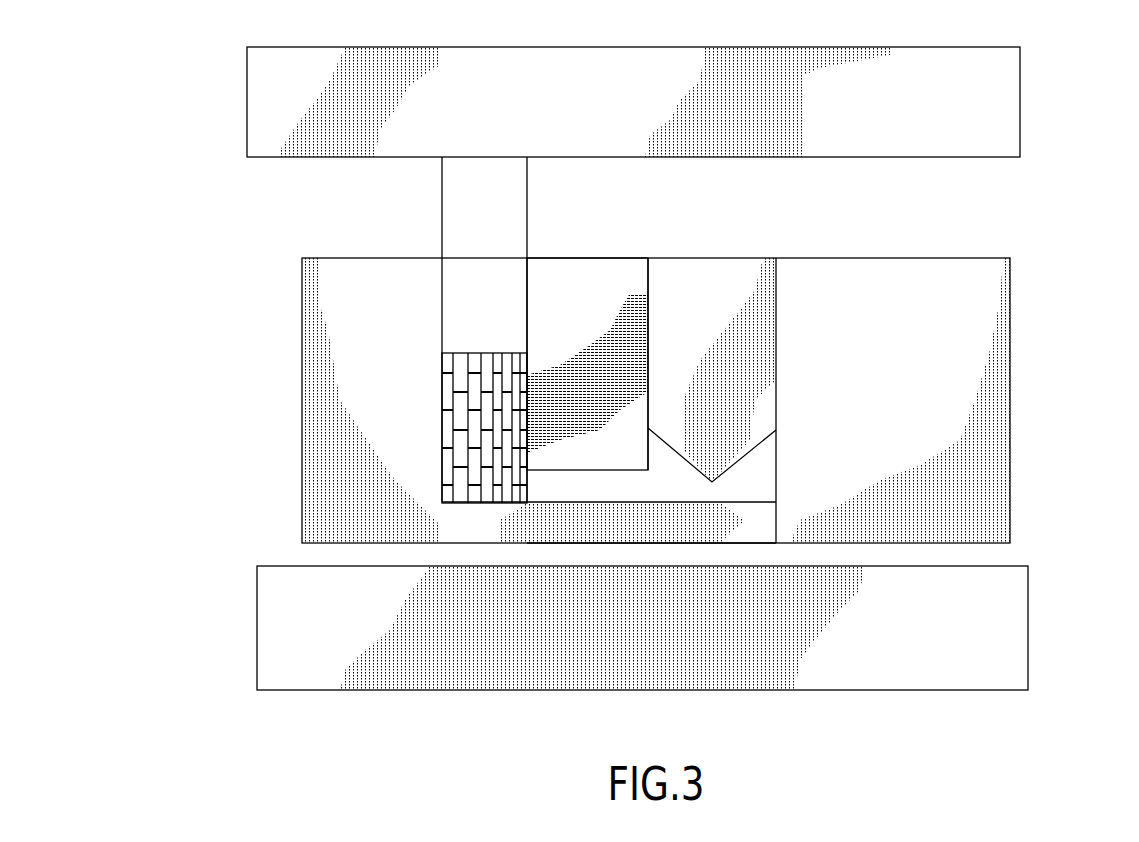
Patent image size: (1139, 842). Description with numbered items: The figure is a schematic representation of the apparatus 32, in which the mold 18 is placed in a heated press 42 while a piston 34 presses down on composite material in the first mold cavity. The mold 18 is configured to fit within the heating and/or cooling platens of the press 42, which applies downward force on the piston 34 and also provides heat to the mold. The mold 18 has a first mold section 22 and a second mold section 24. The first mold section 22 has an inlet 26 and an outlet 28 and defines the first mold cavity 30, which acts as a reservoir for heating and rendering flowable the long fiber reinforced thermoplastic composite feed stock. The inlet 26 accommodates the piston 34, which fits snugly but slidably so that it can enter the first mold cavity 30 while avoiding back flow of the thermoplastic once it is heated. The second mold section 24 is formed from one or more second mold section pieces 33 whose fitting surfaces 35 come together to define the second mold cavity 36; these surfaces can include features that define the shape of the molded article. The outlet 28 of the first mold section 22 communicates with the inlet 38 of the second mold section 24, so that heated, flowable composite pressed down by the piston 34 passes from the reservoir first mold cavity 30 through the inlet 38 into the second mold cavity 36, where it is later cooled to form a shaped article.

The mold 18 is at (302, 378).
The first mold section 22 is at (318, 295).
The second mold section 24 is at (762, 530).
The inlet 26 is at (527, 250).
The outlet 28 is at (545, 485).
The first mold cavity 30 is at (442, 414).
The apparatus 32 is at (1042, 184).
The second mold section pieces 33 is at (752, 272).
The piston 34 is at (441, 198).
The fitting surfaces 35 is at (742, 450).
The second mold cavity 36 is at (670, 488).
The inlet 38 is at (638, 488).
The press 42 is at (955, 158).